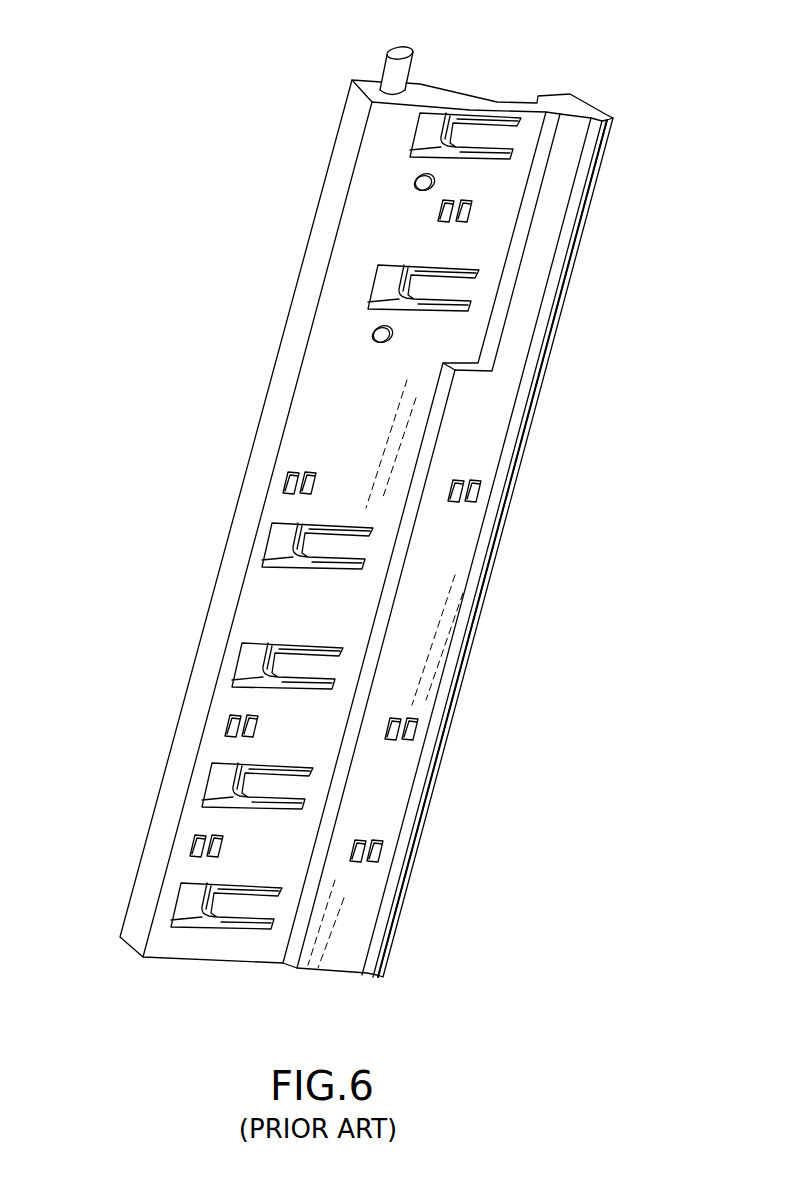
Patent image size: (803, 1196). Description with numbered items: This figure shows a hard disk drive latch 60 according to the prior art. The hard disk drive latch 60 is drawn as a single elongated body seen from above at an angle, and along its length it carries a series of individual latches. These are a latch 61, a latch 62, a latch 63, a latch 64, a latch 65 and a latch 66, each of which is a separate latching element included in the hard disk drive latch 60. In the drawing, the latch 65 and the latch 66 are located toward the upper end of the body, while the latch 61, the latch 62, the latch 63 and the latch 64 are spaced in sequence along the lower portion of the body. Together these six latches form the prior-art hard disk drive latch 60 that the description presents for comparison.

The hard disk drive latch 60 is at (583, 108).
The latch 61 is at (257, 557).
The latch 62 is at (227, 677).
The latch 63 is at (197, 797).
The latch 64 is at (166, 917).
The latch 65 is at (346, 308).
The latch 66 is at (388, 156).